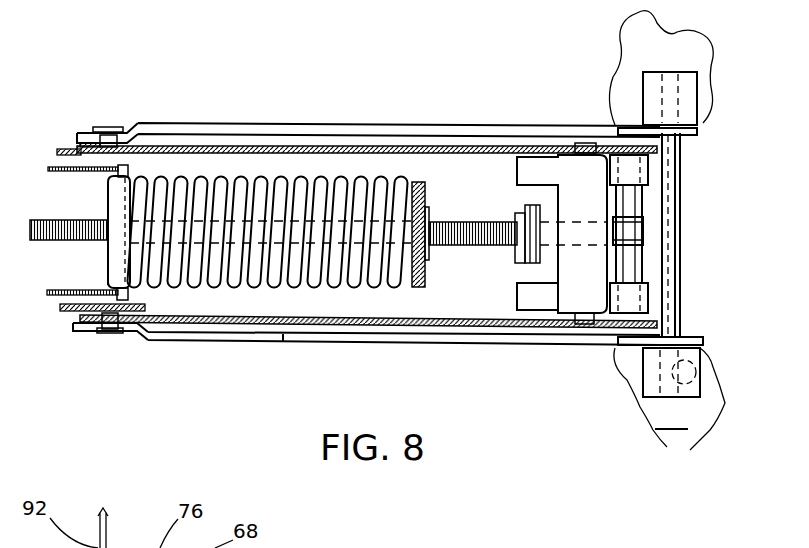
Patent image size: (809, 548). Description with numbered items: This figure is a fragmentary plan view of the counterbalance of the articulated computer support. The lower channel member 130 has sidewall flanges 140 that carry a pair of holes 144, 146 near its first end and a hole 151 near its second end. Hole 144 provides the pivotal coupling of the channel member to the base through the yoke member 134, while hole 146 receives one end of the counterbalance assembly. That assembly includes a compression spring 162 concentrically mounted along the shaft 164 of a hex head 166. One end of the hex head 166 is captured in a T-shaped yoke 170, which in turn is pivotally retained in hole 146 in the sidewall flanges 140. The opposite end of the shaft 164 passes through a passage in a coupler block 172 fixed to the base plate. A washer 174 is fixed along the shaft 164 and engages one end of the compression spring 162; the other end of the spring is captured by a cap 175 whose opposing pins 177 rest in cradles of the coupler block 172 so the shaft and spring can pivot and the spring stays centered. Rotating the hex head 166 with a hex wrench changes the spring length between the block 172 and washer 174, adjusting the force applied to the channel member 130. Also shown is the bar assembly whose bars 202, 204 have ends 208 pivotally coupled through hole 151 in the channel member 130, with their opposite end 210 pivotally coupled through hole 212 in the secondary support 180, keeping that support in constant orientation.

The lower channel member 130 is at (283, 332).
The yoke member 134 is at (640, 298).
The sidewall flanges 140 is at (377, 325).
The hole 144 is at (612, 138).
The hole 146 is at (588, 330).
The hole 151 is at (108, 128).
The compression spring 162 is at (392, 290).
The shaft 164 is at (473, 222).
The hex head 166 is at (643, 238).
The T-shaped yoke 170 is at (600, 279).
The coupler block 172 is at (68, 291).
The washer 174 is at (423, 262).
The cap 175 is at (114, 207).
The pins 177 is at (130, 171).
The secondary support 180 is at (669, 399).
The bar 202 is at (443, 343).
The bar 204 is at (455, 125).
The ends 208 is at (57, 152).
The end 210 is at (697, 134).
The hole 212 is at (697, 383).